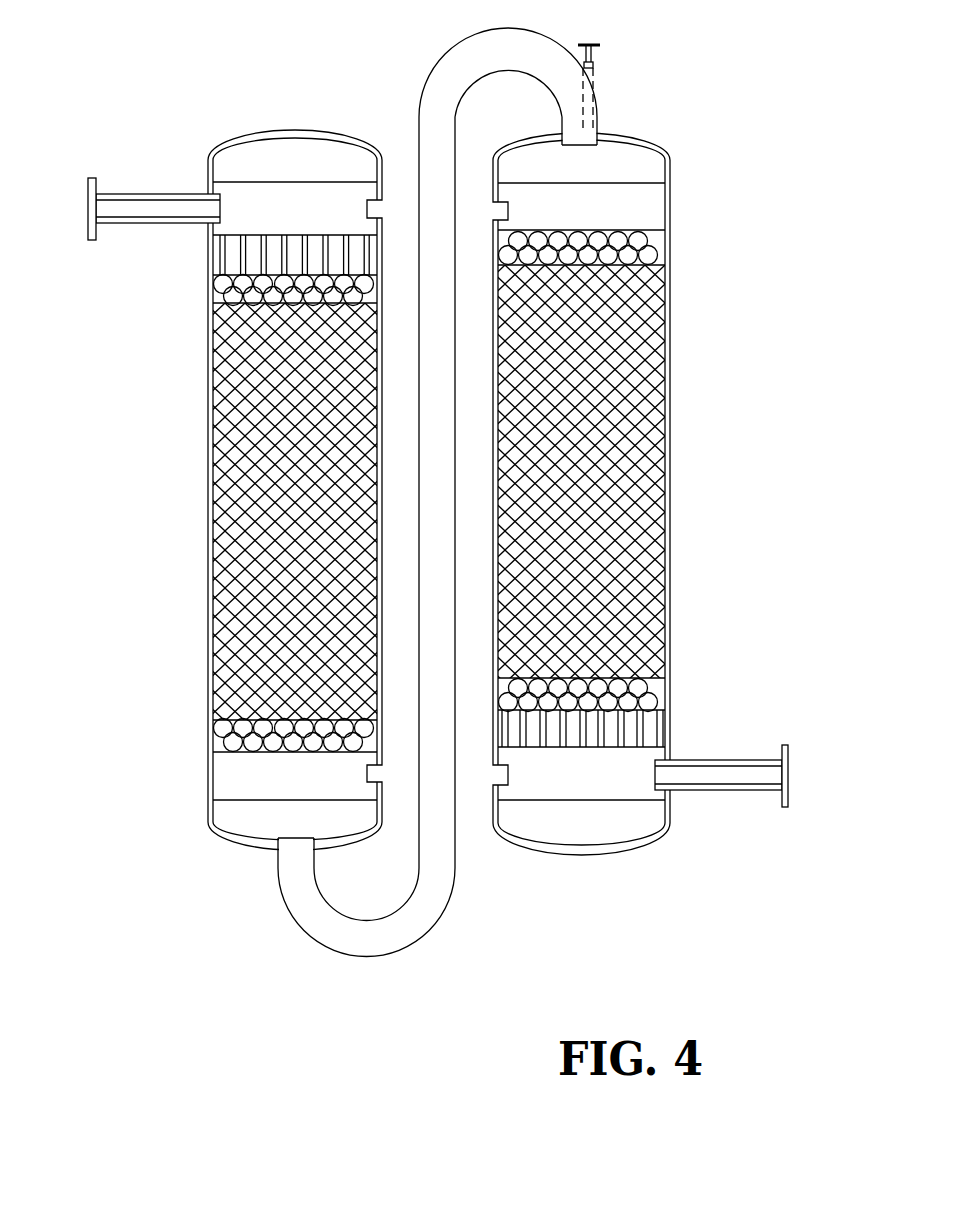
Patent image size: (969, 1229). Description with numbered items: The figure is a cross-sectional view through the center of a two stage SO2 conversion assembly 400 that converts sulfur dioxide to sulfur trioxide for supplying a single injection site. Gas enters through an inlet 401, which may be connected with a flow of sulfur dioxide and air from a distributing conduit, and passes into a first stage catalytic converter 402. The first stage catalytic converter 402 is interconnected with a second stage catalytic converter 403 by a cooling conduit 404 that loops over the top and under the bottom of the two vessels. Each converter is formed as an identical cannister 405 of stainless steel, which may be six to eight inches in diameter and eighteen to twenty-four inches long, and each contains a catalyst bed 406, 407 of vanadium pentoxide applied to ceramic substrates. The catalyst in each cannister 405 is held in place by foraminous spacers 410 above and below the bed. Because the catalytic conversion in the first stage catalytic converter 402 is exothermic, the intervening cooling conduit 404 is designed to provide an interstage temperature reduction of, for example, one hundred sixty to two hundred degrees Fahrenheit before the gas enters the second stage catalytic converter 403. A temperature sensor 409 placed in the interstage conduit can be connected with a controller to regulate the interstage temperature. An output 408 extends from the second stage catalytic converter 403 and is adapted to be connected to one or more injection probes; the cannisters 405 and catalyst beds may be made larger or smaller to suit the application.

The two stage SO2 conversion assembly 400 is at (748, 114).
The inlet 401 is at (68, 210).
The first stage catalytic converter 402 is at (143, 405).
The second stage catalytic converter 403 is at (735, 408).
The cooling conduit 404 is at (419, 118).
The cannister 405 is at (208, 630).
The catalyst bed 406 is at (295, 511).
The catalyst bed 407 is at (581, 471).
The output 408 is at (806, 775).
The temperature sensor 409 is at (596, 57).
The foraminous spacers 410 is at (223, 282).